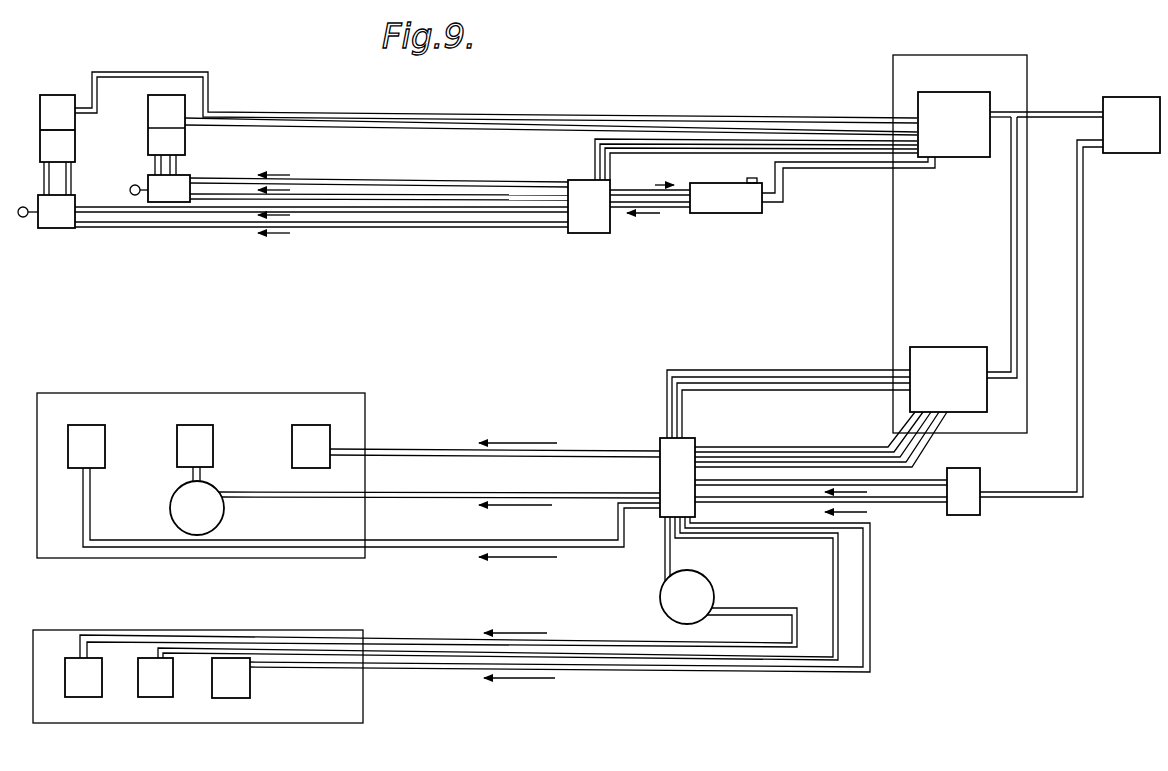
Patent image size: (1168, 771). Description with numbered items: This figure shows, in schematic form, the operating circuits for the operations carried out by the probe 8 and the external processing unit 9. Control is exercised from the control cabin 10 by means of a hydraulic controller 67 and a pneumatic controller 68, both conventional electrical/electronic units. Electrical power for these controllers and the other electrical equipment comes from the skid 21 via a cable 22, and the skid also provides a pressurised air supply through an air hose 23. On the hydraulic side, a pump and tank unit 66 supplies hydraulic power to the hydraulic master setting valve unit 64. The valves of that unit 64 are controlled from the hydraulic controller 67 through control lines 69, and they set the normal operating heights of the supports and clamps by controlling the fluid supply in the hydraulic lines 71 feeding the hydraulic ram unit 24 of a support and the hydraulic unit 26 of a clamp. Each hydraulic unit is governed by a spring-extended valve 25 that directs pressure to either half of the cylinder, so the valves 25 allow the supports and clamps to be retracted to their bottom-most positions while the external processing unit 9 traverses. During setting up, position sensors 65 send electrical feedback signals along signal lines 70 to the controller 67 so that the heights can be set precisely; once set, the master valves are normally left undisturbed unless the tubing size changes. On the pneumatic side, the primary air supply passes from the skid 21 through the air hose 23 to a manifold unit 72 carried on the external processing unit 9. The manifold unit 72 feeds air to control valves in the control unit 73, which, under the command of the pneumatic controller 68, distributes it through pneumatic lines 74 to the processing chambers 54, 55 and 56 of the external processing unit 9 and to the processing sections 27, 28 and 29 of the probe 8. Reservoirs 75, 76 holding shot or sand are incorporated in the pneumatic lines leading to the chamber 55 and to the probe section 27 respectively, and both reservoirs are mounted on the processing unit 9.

The probe 8 is at (48, 630).
The external processing unit 9 is at (70, 394).
The control cabin 10 is at (893, 73).
The skid 21 is at (1122, 80).
The cable 22 is at (1065, 109).
The air hose 23 is at (1087, 216).
The hydraulic ram unit 24 is at (65, 148).
The valve 25 is at (58, 222).
The hydraulic unit 26 is at (155, 145).
The processing section 27 is at (73, 657).
The processing section 28 is at (145, 660).
The processing section 29 is at (235, 667).
The processing chamber 54 is at (97, 433).
The processing chamber 55 is at (205, 435).
The processing chamber 56 is at (303, 427).
The hydraulic master setting valve unit 64 is at (585, 226).
The position sensor 65 is at (57, 100).
The pump and tank unit 66 is at (712, 214).
The hydraulic controller 67 is at (958, 148).
The pneumatic controller 68 is at (953, 347).
The control lines 69 is at (639, 151).
The signal lines 70 is at (295, 111).
The hydraulic lines 71 is at (380, 226).
The manifold unit 72 is at (965, 508).
The control unit 73 is at (660, 445).
The pneumatic lines 74 is at (432, 450).
The reservoir 75 is at (660, 597).
The reservoir 76 is at (170, 509).